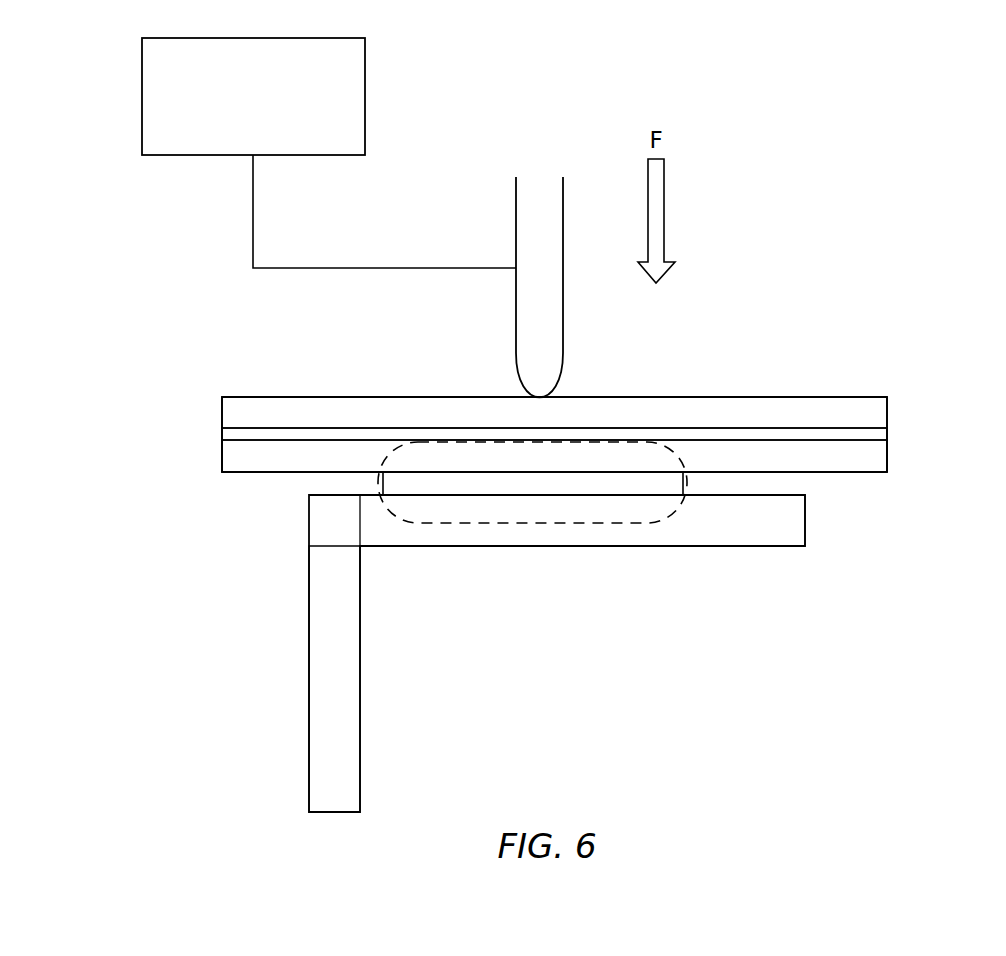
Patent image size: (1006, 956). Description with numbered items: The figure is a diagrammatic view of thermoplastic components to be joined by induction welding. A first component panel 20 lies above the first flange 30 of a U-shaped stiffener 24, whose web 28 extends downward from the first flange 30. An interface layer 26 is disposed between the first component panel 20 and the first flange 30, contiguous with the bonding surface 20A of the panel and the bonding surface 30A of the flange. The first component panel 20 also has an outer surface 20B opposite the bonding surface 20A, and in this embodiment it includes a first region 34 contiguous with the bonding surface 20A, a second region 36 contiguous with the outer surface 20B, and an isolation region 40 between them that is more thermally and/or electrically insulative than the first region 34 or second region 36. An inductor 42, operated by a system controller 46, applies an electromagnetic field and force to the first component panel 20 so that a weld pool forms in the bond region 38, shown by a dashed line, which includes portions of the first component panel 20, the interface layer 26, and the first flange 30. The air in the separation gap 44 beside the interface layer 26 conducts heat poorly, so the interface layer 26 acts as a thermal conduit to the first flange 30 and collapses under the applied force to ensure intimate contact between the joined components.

The first component panel 20 is at (536, 435).
The bonding surface 20A is at (267, 472).
The outer surface 20B is at (295, 394).
The stiffener 24 is at (537, 643).
The interface layer 26 is at (452, 483).
The web 28 is at (332, 702).
The first flange 30 is at (768, 522).
The bonding surface 30A is at (788, 487).
The first region 34 is at (878, 457).
The second region 36 is at (878, 409).
The bond region 38 is at (545, 525).
The isolation region 40 is at (878, 433).
The inductor 42 is at (535, 205).
The separation gap 44 is at (340, 480).
The system controller 46 is at (268, 132).